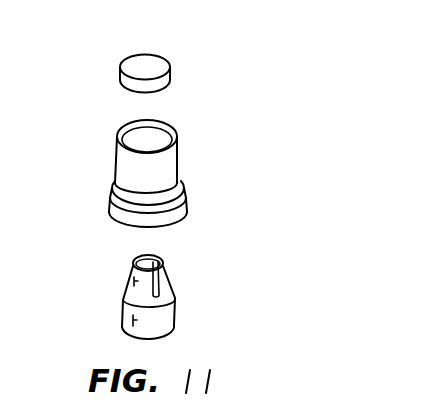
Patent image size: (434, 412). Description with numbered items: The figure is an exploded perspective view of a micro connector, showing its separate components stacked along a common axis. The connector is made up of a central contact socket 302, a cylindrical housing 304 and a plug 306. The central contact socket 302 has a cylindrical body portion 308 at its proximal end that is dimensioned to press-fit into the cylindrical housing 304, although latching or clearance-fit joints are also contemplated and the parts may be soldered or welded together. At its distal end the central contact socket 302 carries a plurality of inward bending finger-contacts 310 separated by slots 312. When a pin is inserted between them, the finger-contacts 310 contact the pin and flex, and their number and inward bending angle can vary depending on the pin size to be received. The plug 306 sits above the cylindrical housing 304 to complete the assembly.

The central contact socket 302 is at (173, 315).
The cylindrical housing 304 is at (177, 160).
The plug 306 is at (170, 73).
The cylindrical body portion 308 is at (130, 318).
The finger-contacts 310 is at (133, 280).
The slots 312 is at (158, 277).